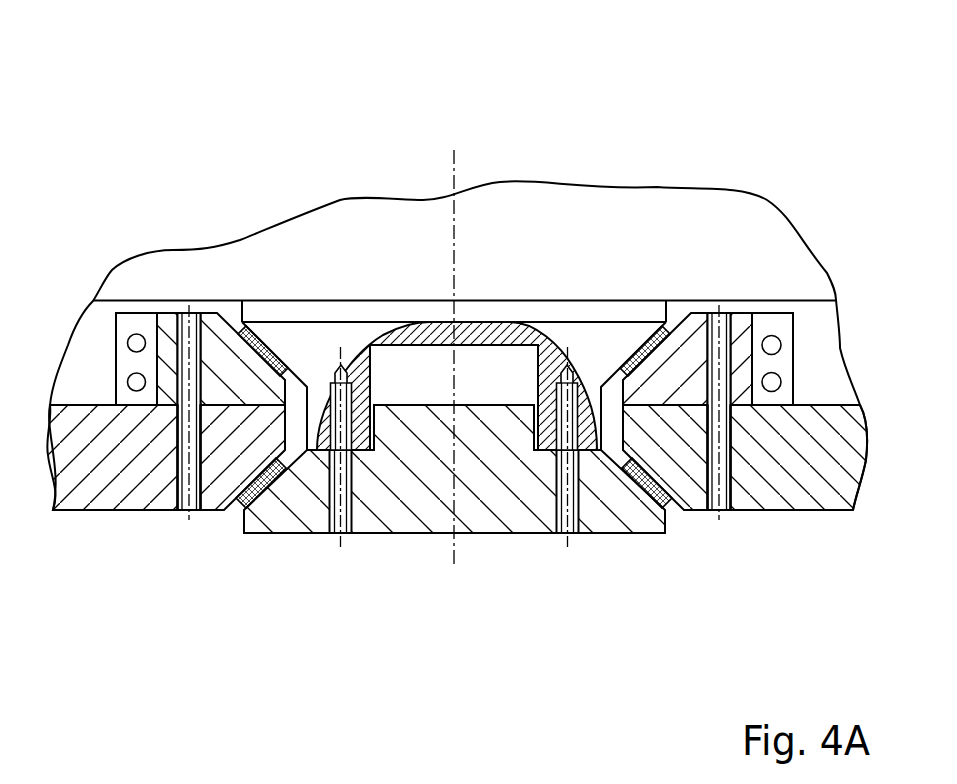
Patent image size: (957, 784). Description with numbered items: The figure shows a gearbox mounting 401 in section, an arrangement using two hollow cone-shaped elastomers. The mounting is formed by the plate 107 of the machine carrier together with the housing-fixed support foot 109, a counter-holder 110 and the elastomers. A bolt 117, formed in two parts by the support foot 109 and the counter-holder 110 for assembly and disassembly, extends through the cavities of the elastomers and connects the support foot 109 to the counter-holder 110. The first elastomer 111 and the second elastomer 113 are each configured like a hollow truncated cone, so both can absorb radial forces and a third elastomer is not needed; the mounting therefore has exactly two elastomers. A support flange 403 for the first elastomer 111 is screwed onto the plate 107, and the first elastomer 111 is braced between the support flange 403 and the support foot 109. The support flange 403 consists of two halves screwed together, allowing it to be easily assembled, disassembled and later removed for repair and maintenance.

The gearbox mounting 401 is at (156, 103).
The support foot 109 is at (193, 268).
The first elastomer 111 is at (263, 343).
The bolt 117 is at (372, 386).
The support flange 403 is at (680, 377).
The second elastomer 113 is at (292, 533).
The counter-holder 110 is at (371, 492).
The plate 107 is at (787, 477).